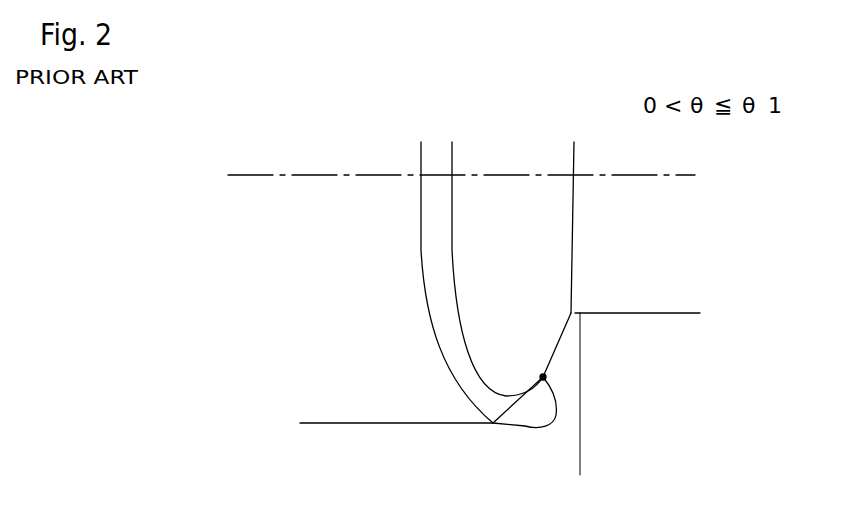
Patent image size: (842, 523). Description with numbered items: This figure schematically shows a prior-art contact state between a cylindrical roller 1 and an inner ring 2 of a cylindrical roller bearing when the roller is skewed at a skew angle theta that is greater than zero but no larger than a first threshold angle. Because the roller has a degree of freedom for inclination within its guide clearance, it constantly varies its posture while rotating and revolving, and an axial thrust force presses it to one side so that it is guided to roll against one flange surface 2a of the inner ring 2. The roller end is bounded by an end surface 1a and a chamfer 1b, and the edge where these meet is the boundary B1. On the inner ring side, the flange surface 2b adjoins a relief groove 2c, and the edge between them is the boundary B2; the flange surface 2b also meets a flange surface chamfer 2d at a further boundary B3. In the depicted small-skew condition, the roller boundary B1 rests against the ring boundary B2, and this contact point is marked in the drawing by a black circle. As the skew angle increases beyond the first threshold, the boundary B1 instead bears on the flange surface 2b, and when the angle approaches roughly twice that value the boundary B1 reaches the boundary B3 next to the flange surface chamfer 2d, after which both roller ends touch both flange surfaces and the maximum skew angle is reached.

The cylindrical roller 1 is at (275, 230).
The end surface 1a is at (553, 200).
The chamfer 1b is at (433, 205).
The inner ring 2 is at (390, 476).
The flange surface 2a is at (668, 321).
The flange surface 2b is at (553, 338).
The relief groove 2c is at (532, 429).
The flange surface chamfer 2d is at (573, 311).
The boundary between end surface and chamfer B1 is at (463, 273).
The boundary between flange surface and relief groove B2 is at (546, 379).
The boundary between flange surface and flange surface chamfer B3 is at (563, 316).